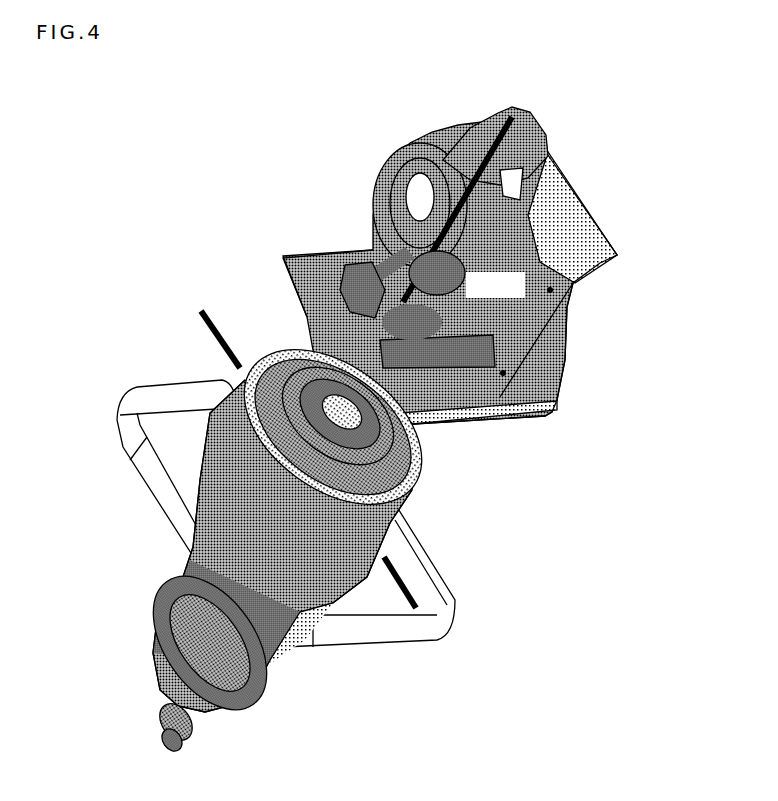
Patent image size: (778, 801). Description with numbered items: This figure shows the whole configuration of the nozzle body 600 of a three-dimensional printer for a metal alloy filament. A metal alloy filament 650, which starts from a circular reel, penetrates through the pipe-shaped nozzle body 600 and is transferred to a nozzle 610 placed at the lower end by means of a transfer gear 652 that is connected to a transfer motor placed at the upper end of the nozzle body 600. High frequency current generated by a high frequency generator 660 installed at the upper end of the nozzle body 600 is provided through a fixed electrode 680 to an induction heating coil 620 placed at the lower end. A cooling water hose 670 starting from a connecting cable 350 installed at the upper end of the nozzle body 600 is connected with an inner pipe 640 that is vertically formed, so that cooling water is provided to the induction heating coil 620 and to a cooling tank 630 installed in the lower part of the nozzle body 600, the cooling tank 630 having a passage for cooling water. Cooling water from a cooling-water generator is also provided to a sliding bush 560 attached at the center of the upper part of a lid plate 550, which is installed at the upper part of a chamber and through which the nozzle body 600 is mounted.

The connecting cable 350 is at (548, 150).
The lid plate 550 is at (363, 640).
The sliding bush 560 is at (244, 420).
The nozzle body 600 is at (167, 610).
The nozzle 610 is at (155, 733).
The induction heating coil 620 is at (193, 733).
The cooling tank 630 is at (150, 643).
The inner pipe 640 is at (384, 432).
The metal alloy filament 650 is at (485, 130).
The transfer gear 652 is at (457, 282).
The high frequency generator 660 is at (568, 336).
The cooling water hose 670 is at (383, 182).
The fixed electrode 680 is at (357, 262).